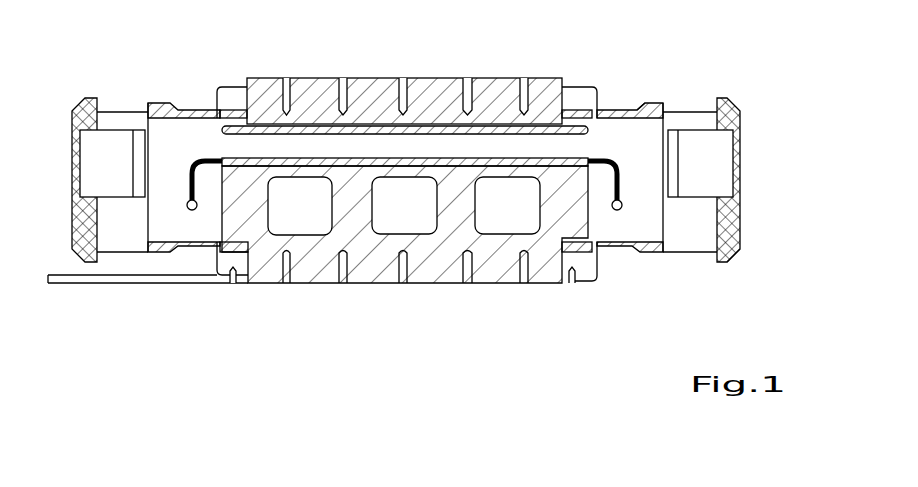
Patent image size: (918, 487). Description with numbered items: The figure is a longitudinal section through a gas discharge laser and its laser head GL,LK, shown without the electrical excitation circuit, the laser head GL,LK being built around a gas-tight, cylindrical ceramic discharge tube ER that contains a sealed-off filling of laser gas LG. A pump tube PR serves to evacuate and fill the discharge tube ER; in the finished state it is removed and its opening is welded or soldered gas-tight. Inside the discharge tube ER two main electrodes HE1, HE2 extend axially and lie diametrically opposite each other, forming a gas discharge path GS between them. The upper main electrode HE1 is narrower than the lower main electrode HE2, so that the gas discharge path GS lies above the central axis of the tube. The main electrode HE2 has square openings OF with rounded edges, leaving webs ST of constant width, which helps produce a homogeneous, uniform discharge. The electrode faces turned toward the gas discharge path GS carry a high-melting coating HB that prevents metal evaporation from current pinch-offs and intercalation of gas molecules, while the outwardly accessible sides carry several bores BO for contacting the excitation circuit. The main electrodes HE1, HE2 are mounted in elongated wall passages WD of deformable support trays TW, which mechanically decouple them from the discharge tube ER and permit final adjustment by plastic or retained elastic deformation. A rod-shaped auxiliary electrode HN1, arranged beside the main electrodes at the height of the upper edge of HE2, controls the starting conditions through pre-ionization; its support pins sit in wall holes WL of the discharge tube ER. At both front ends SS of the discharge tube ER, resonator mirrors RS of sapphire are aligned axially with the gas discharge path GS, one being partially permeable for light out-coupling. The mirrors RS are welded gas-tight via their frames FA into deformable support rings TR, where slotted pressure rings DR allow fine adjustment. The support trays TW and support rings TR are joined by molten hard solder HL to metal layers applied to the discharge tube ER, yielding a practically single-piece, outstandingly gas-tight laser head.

The gas discharge laser / laser head GL,LK is at (157, 30).
The main electrode HE1 is at (449, 92).
The main electrode HE2 is at (493, 265).
The bore BO is at (286, 92).
The wall passage WD is at (573, 112).
The gas discharge path GS is at (338, 148).
The high-melting coating HB is at (447, 163).
The web ST is at (352, 195).
The opening OF is at (428, 220).
The support tray TW is at (232, 97).
The hard solder HL is at (213, 108).
The front end SS is at (148, 108).
The discharge tube ER is at (648, 106).
The filling of laser gas LG is at (633, 142).
The support ring TR is at (113, 122).
The pressure ring DR is at (75, 232).
The resonator mirror RS is at (140, 170).
The frame FA is at (728, 258).
The wall hole WL is at (190, 212).
The auxiliary electrode HN1 is at (186, 200).
The pump tube PR is at (60, 283).